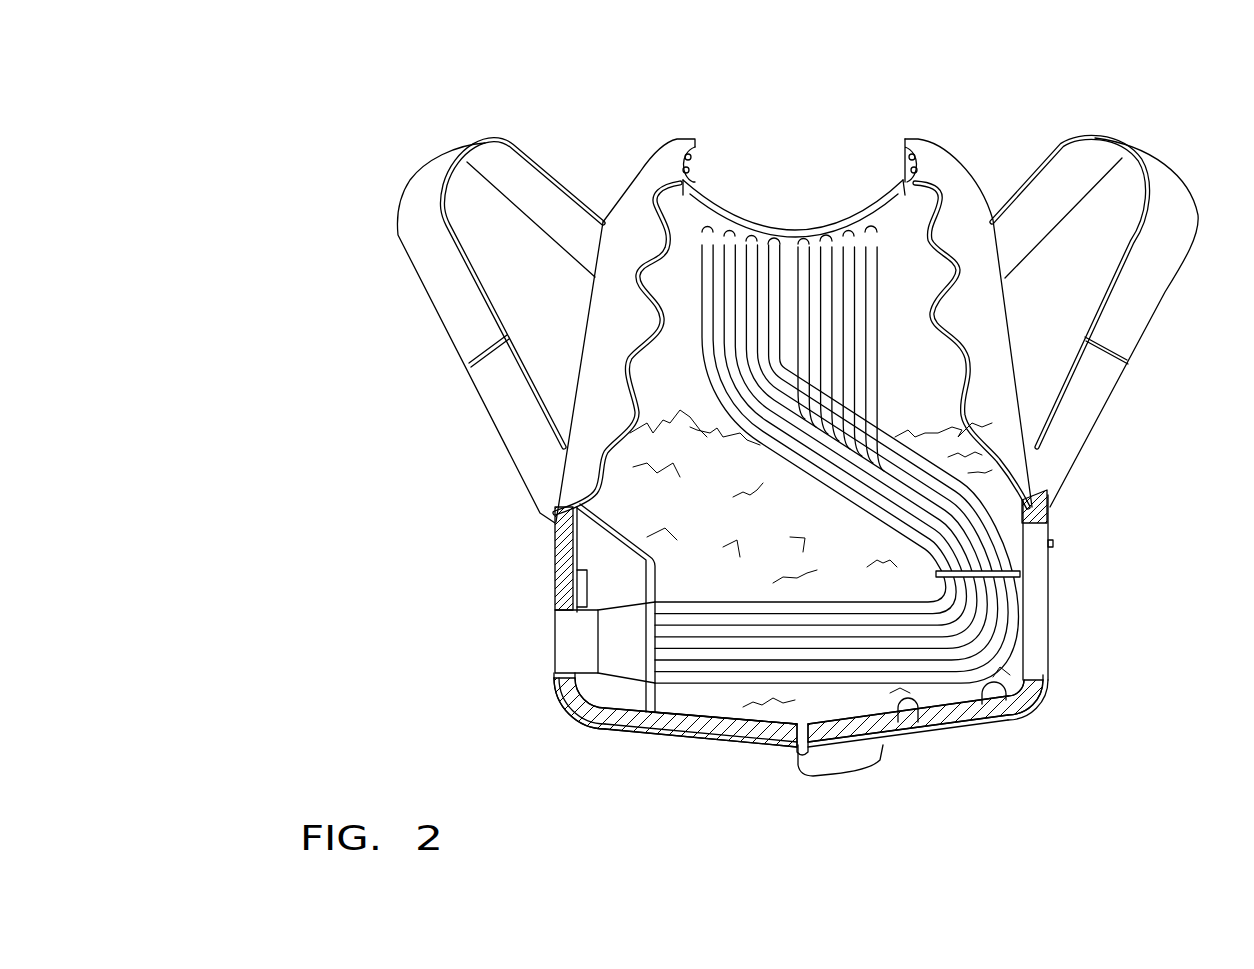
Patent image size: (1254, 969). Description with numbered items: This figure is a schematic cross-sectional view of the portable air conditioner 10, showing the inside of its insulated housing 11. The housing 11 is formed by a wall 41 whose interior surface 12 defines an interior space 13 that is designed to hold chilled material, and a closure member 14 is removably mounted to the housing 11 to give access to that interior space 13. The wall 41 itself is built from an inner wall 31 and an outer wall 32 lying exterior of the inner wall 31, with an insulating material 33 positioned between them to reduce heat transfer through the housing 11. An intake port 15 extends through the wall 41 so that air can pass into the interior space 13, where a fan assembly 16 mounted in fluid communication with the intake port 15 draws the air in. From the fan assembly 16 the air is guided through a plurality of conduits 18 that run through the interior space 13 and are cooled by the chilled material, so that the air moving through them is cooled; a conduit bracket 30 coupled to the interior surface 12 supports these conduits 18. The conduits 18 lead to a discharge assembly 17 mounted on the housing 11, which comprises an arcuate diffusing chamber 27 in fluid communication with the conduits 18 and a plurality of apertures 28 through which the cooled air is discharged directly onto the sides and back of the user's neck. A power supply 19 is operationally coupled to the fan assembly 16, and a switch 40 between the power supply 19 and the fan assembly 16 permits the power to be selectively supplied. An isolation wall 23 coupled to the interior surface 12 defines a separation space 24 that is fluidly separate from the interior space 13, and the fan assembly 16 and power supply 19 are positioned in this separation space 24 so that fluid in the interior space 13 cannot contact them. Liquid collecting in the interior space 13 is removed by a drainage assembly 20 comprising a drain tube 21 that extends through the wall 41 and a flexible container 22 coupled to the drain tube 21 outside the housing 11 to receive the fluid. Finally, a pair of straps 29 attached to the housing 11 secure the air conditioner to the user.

The portable air conditioner 10 is at (1122, 90).
The insulated housing 11 is at (1047, 693).
The interior surface 12 is at (1043, 695).
The interior space 13 is at (670, 373).
The closure member 14 is at (1038, 575).
The intake port 15 is at (553, 633).
The fan assembly 16 is at (617, 700).
The discharge assembly 17 is at (800, 180).
The conduits 18 is at (1057, 520).
The power supply 19 is at (580, 573).
The drainage assembly 20 is at (788, 782).
The drain tube 21 is at (798, 748).
The flexible container 22 is at (812, 780).
The isolation wall 23 is at (590, 538).
The separation space 24 is at (593, 687).
The diffusing chamber 27 is at (703, 203).
The apertures 28 is at (695, 157).
The straps 29 is at (428, 173).
The conduit bracket 30 is at (983, 540).
The inner wall 31 is at (913, 727).
The outer wall 32 is at (997, 704).
The insulating material 33 is at (940, 722).
The switch 40 is at (553, 575).
The wall 41 is at (955, 187).